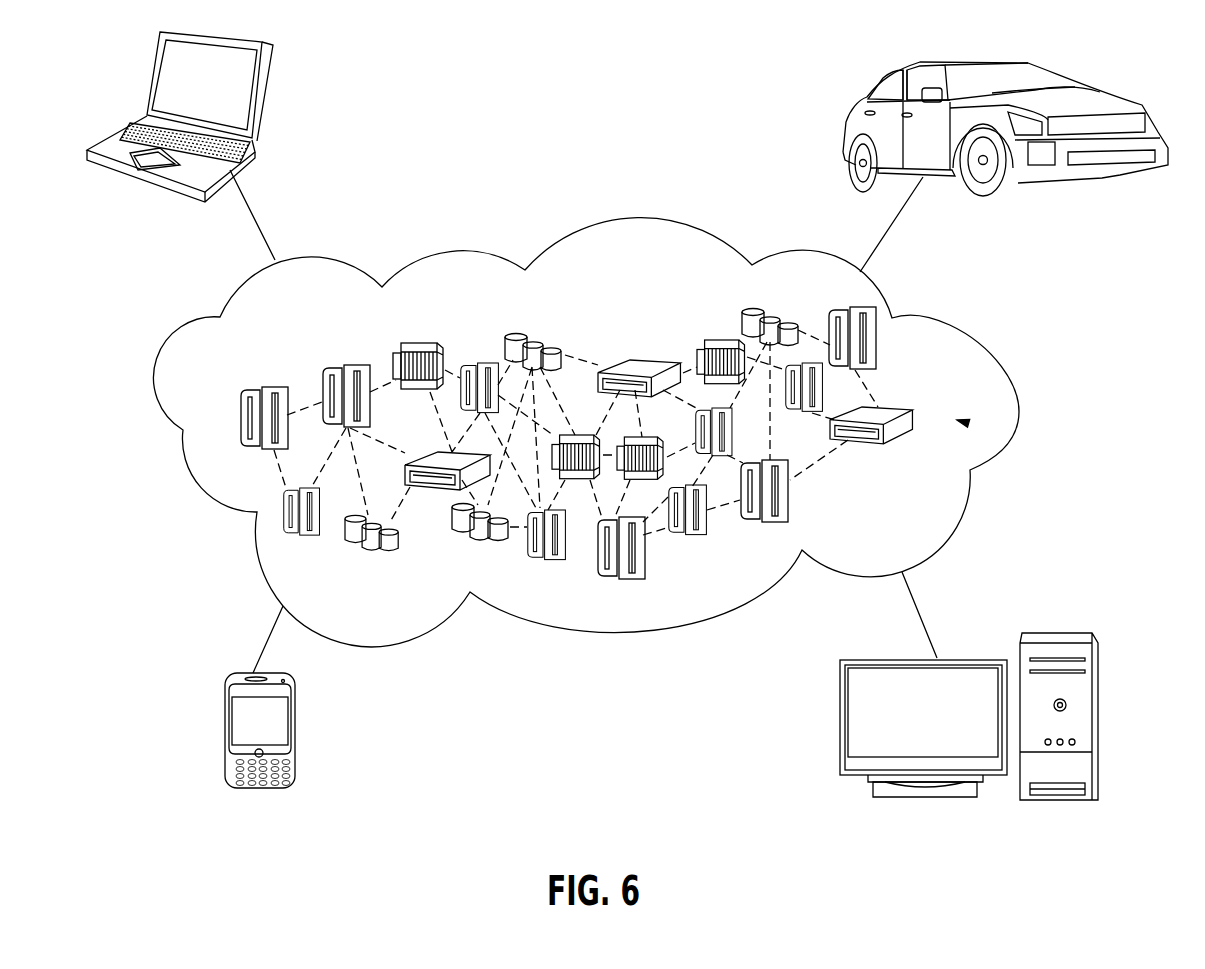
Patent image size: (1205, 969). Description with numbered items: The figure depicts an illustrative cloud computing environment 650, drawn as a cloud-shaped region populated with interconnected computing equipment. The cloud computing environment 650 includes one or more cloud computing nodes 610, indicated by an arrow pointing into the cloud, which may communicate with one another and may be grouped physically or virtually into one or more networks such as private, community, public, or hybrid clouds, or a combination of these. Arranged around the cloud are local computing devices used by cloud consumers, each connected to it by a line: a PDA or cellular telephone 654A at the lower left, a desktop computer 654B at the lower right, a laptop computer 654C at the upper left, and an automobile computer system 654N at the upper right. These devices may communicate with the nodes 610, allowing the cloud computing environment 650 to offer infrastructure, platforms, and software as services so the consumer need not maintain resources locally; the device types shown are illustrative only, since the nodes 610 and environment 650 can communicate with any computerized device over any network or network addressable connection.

The cloud computing environment 650 is at (982, 333).
The cloud computing nodes 610 is at (960, 421).
The PDA or cellular telephone 654A is at (222, 736).
The desktop computer 654B is at (1062, 634).
The laptop computer 654C is at (267, 100).
The automobile computer system 654N is at (853, 105).